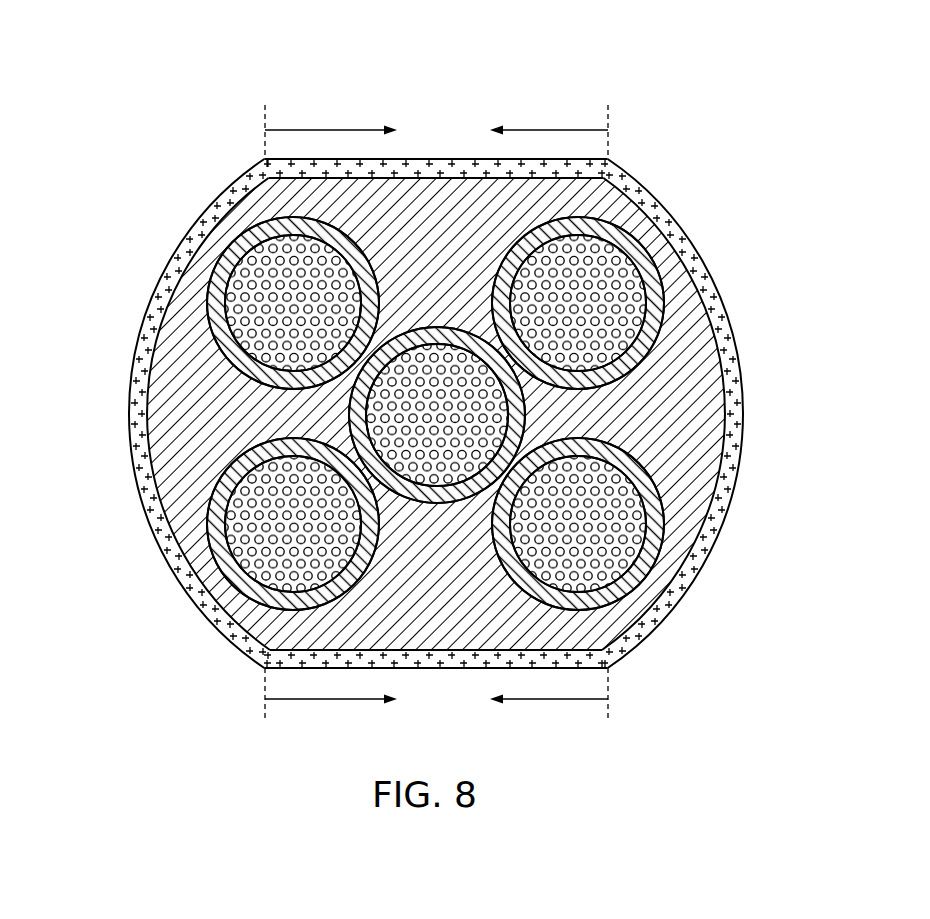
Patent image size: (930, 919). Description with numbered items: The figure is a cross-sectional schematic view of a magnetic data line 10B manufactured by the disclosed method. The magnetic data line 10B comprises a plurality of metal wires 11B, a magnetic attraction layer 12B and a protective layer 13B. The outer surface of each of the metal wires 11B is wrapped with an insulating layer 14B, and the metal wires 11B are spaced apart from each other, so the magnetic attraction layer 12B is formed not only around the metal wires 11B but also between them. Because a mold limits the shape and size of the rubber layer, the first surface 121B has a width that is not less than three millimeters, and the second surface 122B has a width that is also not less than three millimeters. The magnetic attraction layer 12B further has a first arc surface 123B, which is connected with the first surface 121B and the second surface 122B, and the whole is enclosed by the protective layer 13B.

The magnetic data line 10B is at (97, 58).
The metal wires 11B is at (238, 293).
The magnetic attraction layer 12B is at (193, 423).
The protective layer 13B is at (430, 397).
The insulating layer 14B is at (240, 360).
The first surface 121B is at (592, 178).
The second surface 122B is at (587, 652).
The first arc surface 123B is at (653, 610).